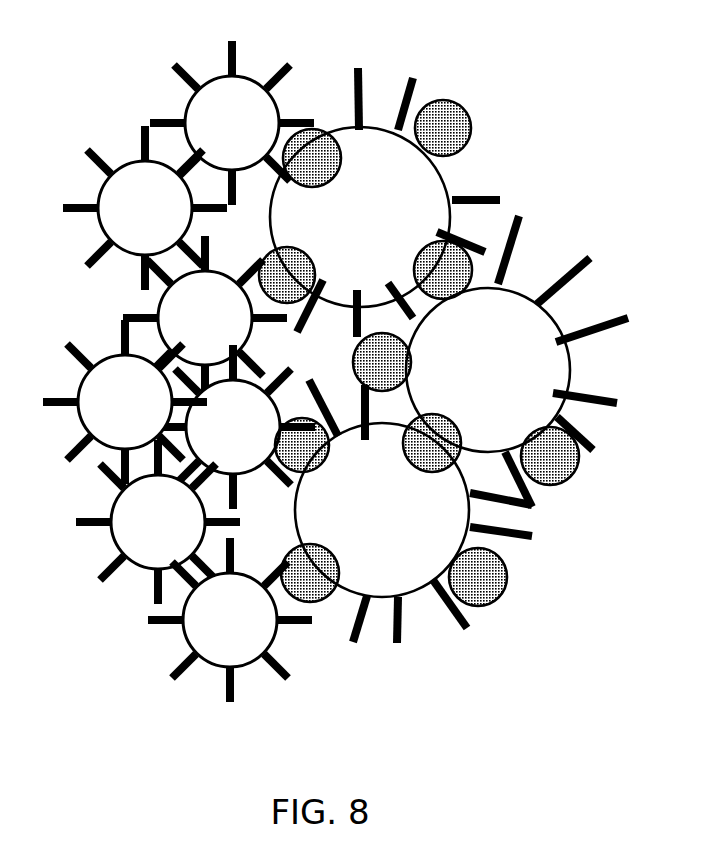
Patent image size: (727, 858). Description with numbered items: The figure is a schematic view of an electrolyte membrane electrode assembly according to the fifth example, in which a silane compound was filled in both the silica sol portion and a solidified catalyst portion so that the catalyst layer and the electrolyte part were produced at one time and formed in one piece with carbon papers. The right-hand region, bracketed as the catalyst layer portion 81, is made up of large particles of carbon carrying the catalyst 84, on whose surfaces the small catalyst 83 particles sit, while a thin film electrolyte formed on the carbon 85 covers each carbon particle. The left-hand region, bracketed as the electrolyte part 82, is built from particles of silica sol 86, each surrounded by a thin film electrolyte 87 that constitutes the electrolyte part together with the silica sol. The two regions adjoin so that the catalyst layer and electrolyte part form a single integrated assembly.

The catalyst layer portion 81 is at (473, 400).
The electrolyte part 82 is at (164, 403).
The catalyst 83 is at (455, 118).
The carbon carrying the catalyst 84 is at (547, 342).
The thin film electrolyte formed on the carbon 85 is at (597, 393).
The silica sol 86 is at (137, 187).
The thin film electrolyte 87 is at (120, 330).